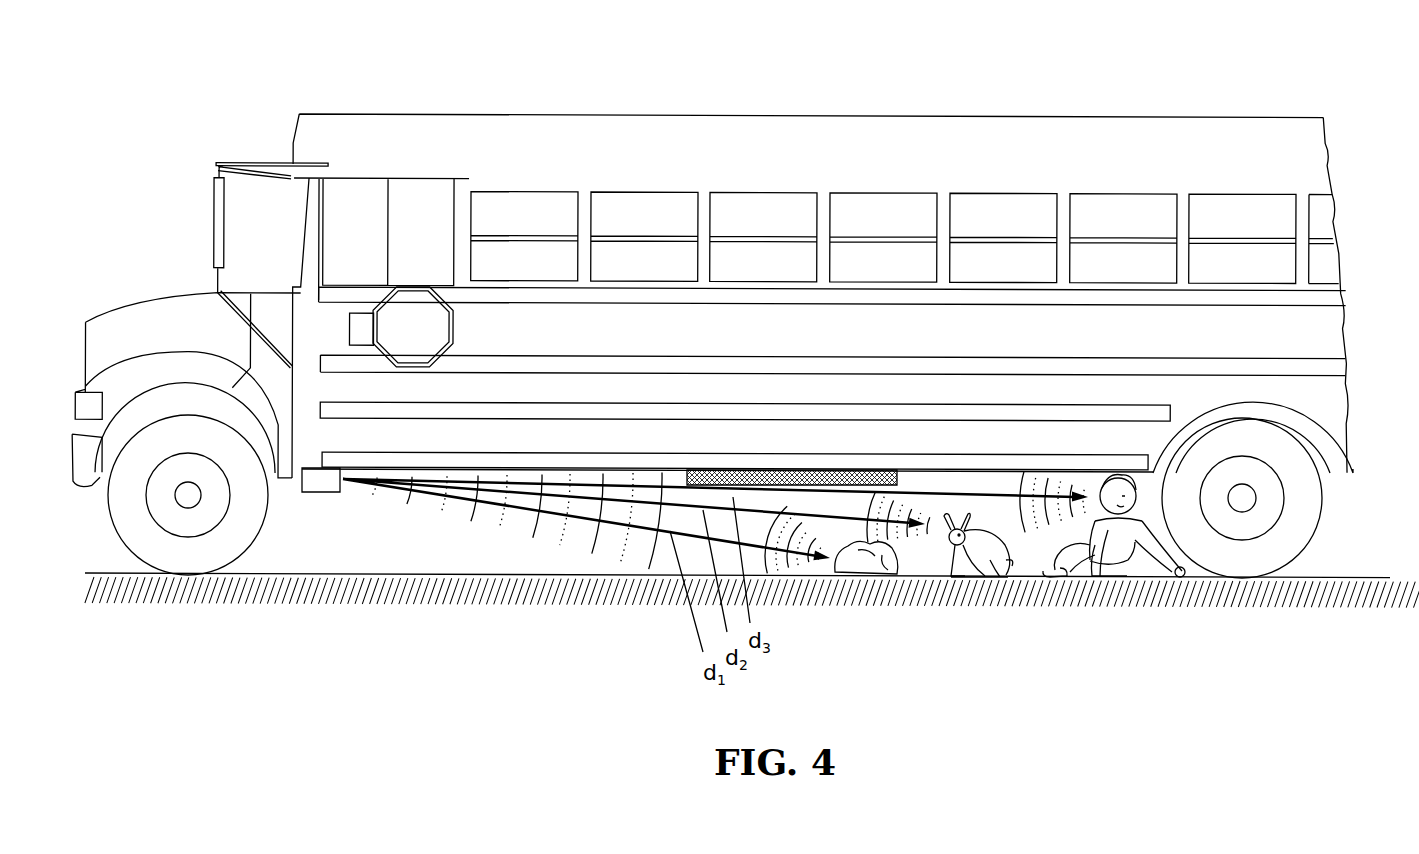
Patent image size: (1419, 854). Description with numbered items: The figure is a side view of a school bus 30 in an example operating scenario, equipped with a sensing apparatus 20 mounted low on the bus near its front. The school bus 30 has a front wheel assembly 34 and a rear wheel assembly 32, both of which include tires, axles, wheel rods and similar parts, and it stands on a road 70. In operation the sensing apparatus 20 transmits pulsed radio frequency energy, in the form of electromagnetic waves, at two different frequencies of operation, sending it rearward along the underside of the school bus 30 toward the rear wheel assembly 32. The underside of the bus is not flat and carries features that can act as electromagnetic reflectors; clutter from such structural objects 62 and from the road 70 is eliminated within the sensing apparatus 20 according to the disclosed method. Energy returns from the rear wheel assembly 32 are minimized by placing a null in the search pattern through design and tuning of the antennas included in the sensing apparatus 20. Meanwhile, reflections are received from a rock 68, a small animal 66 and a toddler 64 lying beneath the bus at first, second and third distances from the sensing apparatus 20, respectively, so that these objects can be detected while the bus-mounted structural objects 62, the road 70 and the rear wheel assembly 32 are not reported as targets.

The school bus 30 is at (1137, 137).
The sensing apparatus 20 is at (325, 485).
The front wheel assembly 34 is at (187, 553).
The rear wheel assembly 32 is at (1237, 562).
The structural objects 62 is at (745, 466).
The toddler 64 is at (1117, 547).
The small animal 66 is at (1000, 578).
The rock 68 is at (878, 566).
The road 70 is at (1340, 573).